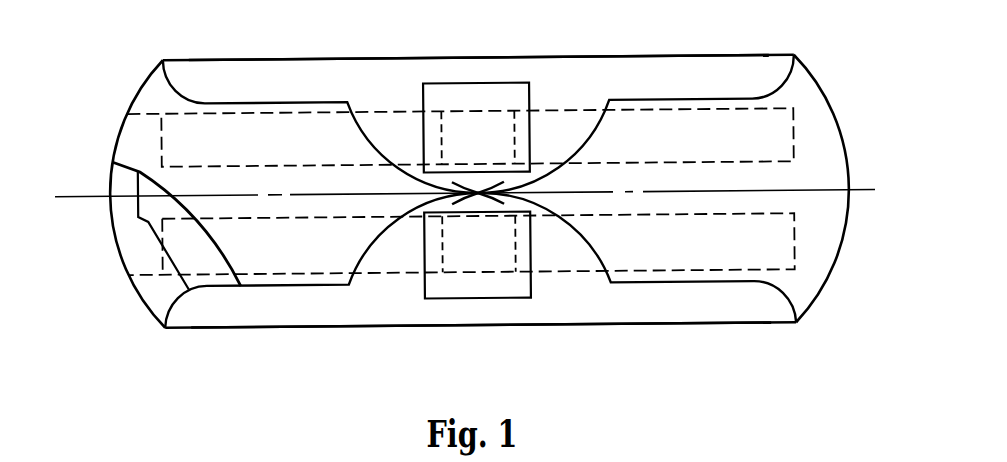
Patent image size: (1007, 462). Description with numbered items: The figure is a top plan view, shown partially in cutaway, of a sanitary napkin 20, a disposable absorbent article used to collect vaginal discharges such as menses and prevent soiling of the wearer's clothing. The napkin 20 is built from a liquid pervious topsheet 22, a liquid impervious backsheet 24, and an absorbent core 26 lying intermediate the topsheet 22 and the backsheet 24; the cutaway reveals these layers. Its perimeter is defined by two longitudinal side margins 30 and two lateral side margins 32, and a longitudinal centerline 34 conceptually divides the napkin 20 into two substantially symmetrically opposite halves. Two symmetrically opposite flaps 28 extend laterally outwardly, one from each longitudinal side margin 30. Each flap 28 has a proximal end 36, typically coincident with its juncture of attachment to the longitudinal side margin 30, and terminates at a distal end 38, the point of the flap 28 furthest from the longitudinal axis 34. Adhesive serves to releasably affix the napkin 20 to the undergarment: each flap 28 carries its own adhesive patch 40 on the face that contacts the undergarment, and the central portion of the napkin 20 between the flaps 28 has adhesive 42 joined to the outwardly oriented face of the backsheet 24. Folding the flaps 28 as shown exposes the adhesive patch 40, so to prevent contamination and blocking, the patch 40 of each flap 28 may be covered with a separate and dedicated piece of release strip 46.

The sanitary napkin 20 is at (135, 342).
The liquid pervious topsheet 22 is at (173, 130).
The liquid impervious backsheet 24 is at (125, 258).
The absorbent core 26 is at (210, 258).
The flap 28 is at (390, 72).
The longitudinal side margin 30 is at (587, 74).
The lateral side margin 32 is at (110, 204).
The longitudinal centerline 34 is at (83, 193).
The proximal end 36 is at (690, 58).
The distal end 38 is at (462, 191).
The adhesive patch 40 is at (487, 120).
The adhesive 42 is at (767, 132).
The release strip 46 is at (460, 117).